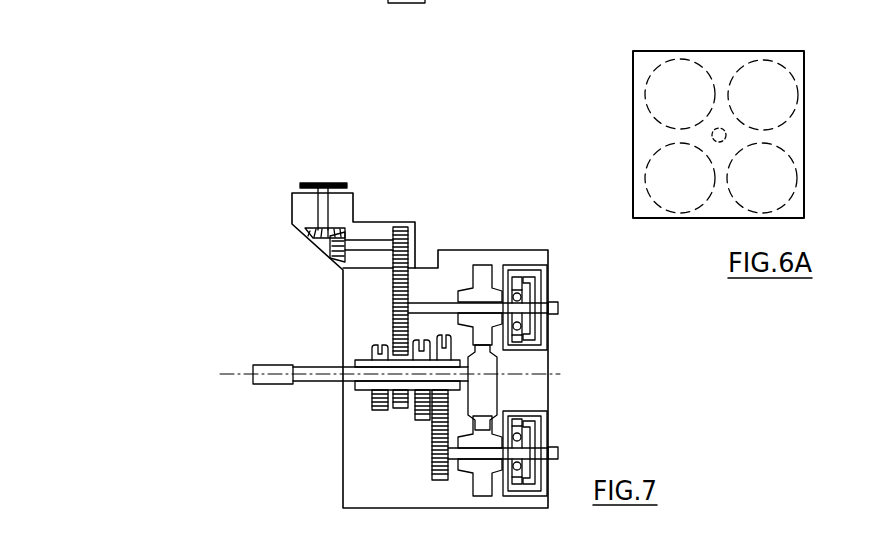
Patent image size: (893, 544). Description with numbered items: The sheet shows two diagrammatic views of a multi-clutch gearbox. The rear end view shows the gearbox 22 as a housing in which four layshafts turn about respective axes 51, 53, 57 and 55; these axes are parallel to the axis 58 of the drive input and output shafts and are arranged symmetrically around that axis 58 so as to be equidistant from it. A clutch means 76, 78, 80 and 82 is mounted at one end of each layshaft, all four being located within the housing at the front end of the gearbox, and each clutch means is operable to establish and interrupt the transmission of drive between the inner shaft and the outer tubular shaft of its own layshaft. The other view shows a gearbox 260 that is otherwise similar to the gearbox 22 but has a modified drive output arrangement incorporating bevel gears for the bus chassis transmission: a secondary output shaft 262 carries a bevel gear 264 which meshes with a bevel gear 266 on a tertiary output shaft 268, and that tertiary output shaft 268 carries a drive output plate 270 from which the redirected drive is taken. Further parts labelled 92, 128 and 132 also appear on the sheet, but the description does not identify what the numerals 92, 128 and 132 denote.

In FIG. 6A, the gearbox 22 is at (656, 38).
In FIG. 6A, the axis 51 is at (680, 94).
In FIG. 6A, the axis 53 is at (762, 94).
In FIG. 6A, the axis 55 is at (762, 178).
In FIG. 6A, the axis 57 is at (680, 178).
In FIG. 6A, the axis 58 is at (712, 136).
In FIG. 6A, the clutch means 76 is at (660, 208).
In FIG. 6A, the clutch means 78 is at (703, 62).
In FIG. 6A, the clutch means 80 is at (768, 61).
In FIG. 6A, the clutch means 82 is at (733, 212).
In FIG. 7, the spur gear 92 is at (393, 313).
In FIG. 7, the element 128 is at (445, 0).
In FIG. 7, the element 132 is at (491, 0).
In FIG. 7, the gearbox 260 is at (548, 240).
In FIG. 7, the secondary output shaft 262 is at (358, 283).
In FIG. 7, the bevel gear 264 is at (332, 262).
In FIG. 7, the bevel gear 266 is at (300, 242).
In FIG. 7, the tertiary output shaft 268 is at (310, 208).
In FIG. 7, the drive output plate 270 is at (305, 182).